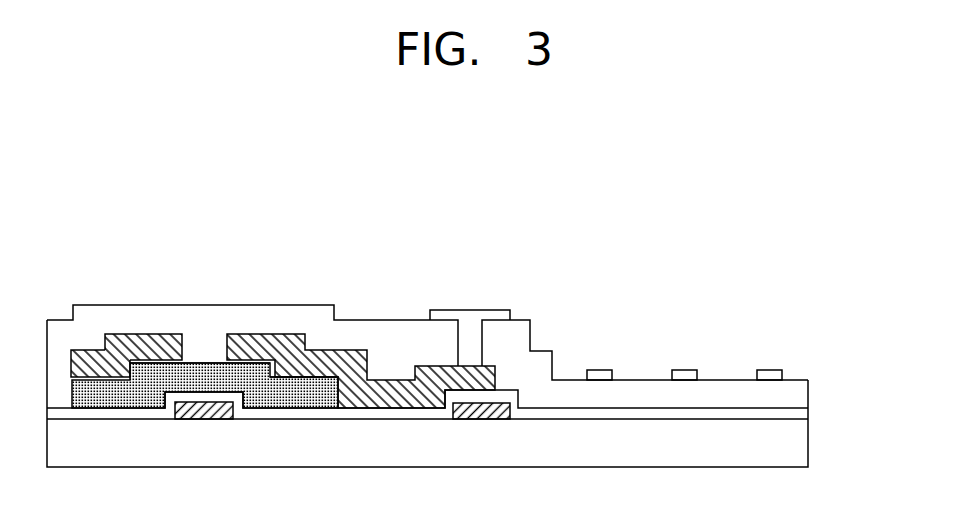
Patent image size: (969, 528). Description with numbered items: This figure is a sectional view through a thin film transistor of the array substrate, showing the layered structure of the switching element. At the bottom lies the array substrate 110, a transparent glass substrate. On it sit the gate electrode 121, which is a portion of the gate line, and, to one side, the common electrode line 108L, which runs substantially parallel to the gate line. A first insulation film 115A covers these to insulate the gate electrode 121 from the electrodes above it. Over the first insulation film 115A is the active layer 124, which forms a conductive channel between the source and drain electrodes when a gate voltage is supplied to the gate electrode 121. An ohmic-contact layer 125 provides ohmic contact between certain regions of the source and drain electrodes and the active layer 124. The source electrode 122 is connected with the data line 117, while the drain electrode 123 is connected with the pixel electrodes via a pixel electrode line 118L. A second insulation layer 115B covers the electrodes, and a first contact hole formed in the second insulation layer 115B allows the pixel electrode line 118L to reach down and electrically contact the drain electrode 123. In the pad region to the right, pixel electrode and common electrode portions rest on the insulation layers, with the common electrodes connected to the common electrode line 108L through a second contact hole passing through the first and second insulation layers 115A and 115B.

The array substrate 110 is at (800, 445).
The first insulation film 115A is at (800, 415).
The second insulation layer 115B is at (800, 391).
The gate electrode 121 is at (203, 419).
The common electrode line 108L is at (476, 419).
The active layer 124 is at (260, 398).
The ohmic-contact layer 125 is at (308, 377).
The data line 117 is at (92, 350).
The source electrode 122 is at (170, 334).
The drain electrode 123 is at (250, 334).
The pixel electrode line 118L is at (470, 320).